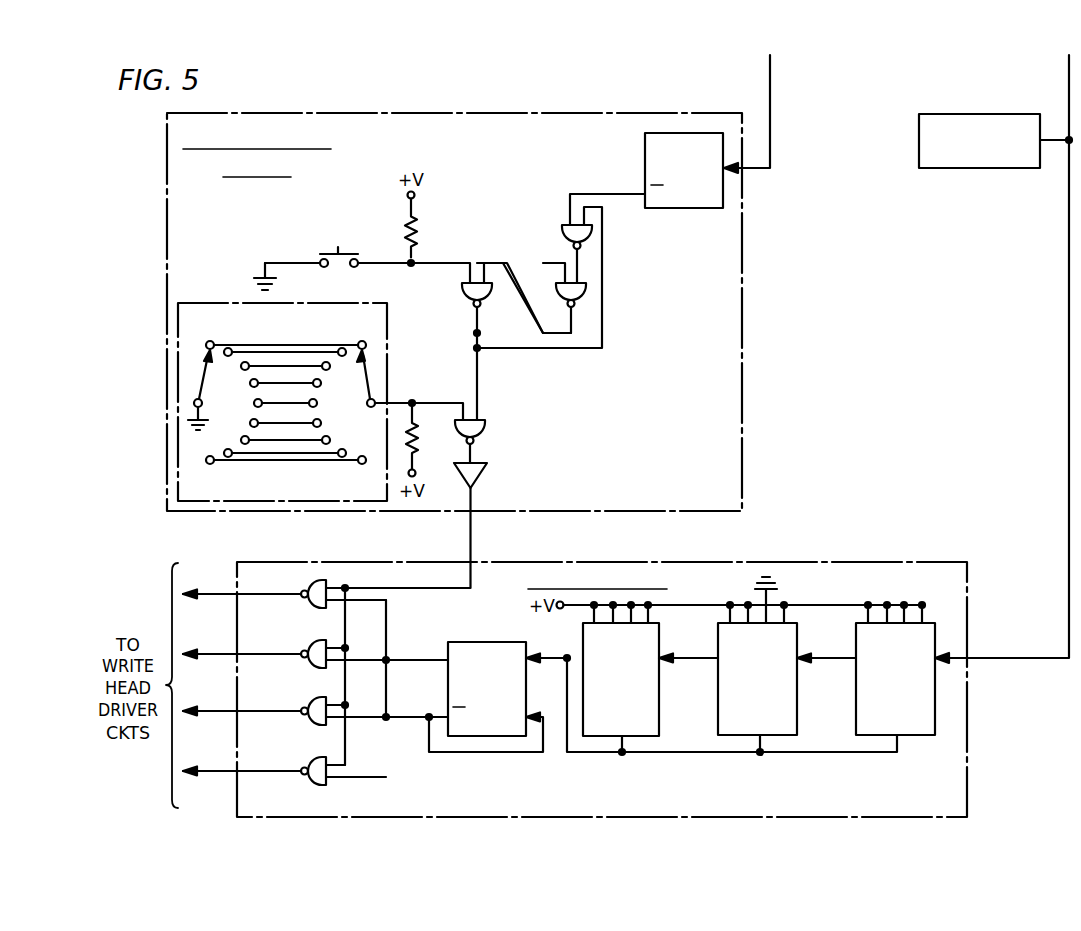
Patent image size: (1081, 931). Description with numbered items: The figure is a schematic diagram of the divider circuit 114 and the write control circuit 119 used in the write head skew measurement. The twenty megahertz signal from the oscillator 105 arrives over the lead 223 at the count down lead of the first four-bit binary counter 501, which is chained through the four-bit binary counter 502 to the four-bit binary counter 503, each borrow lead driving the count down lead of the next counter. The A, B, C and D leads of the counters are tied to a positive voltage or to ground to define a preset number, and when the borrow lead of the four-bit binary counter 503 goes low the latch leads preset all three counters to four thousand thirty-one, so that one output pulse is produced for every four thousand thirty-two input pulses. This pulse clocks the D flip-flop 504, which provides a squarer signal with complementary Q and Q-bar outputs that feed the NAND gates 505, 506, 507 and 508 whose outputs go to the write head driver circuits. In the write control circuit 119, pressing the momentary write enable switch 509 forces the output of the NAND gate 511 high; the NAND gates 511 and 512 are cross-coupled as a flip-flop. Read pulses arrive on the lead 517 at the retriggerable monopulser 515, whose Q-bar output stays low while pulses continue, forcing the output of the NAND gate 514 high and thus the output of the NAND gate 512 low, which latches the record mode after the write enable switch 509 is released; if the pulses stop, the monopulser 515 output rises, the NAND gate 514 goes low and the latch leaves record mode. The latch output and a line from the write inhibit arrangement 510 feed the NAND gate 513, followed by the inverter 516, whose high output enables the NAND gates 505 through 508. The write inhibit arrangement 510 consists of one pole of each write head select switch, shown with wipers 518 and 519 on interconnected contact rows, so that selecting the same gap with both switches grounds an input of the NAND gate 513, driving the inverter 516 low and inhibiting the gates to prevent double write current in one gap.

The write control circuit 119 is at (480, 113).
The 20 Mhz oscillator 105 is at (974, 114).
The lead 223 is at (1053, 142).
The lead 517 is at (770, 150).
The monopulser 515 is at (688, 209).
The NAND gate 514 is at (562, 233).
The NAND gate 512 is at (586, 293).
The NAND gate 511 is at (462, 294).
The NAND gate 513 is at (486, 428).
The inverter 516 is at (487, 476).
The write enable switch 509 is at (325, 254).
The write inhibit arrangement 510 is at (282, 382).
The selector switch wiper 518 is at (246, 414).
The selector switch wiper 519 is at (358, 414).
The divider circuit 114 is at (597, 562).
The D flip-flop 504 is at (488, 642).
The four-bit binary counter 503 is at (659, 713).
The four-bit binary counter 502 is at (797, 713).
The four-bit binary counter 501 is at (913, 736).
The NAND gate 508 is at (315, 608).
The NAND gate 507 is at (315, 666).
The NAND gate 506 is at (315, 724).
The NAND gate 505 is at (315, 783).